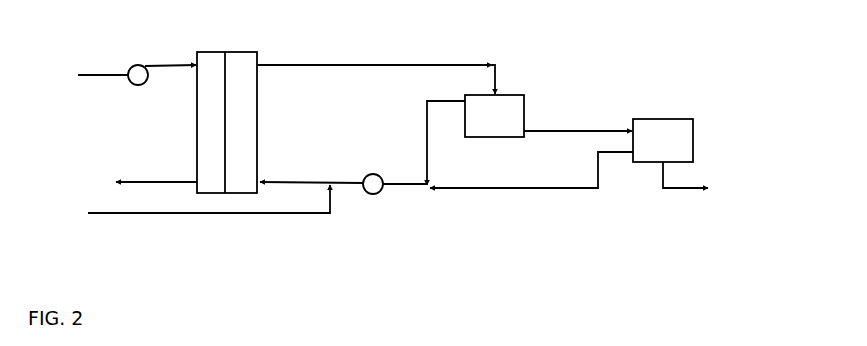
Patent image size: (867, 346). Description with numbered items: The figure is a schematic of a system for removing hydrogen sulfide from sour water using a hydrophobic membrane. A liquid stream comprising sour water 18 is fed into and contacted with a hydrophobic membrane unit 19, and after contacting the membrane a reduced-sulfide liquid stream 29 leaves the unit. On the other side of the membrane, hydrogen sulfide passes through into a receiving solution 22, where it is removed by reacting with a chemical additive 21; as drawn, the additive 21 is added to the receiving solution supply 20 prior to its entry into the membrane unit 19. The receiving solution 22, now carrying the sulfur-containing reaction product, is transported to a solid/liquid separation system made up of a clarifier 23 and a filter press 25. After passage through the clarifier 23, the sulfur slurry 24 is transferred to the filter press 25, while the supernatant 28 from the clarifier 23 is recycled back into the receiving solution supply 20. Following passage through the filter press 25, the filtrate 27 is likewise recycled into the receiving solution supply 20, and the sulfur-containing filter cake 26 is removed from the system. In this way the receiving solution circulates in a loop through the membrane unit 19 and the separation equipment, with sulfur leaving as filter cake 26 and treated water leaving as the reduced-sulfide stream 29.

The liquid stream comprising sour water 18 is at (119, 75).
The hydrophobic membrane unit 19 is at (227, 112).
The receiving solution supply 20 is at (343, 175).
The chemical additive 21 is at (195, 203).
The receiving solution 22 is at (376, 69).
The clarifier 23 is at (494, 116).
The sulfur slurry 24 is at (578, 117).
The filter press 25 is at (663, 140).
The sulfur-containing filter cake 26 is at (698, 180).
The filtrate 27 is at (531, 185).
The supernatant 28 is at (431, 141).
The reduced-sulfide liquid stream 29 is at (141, 183).